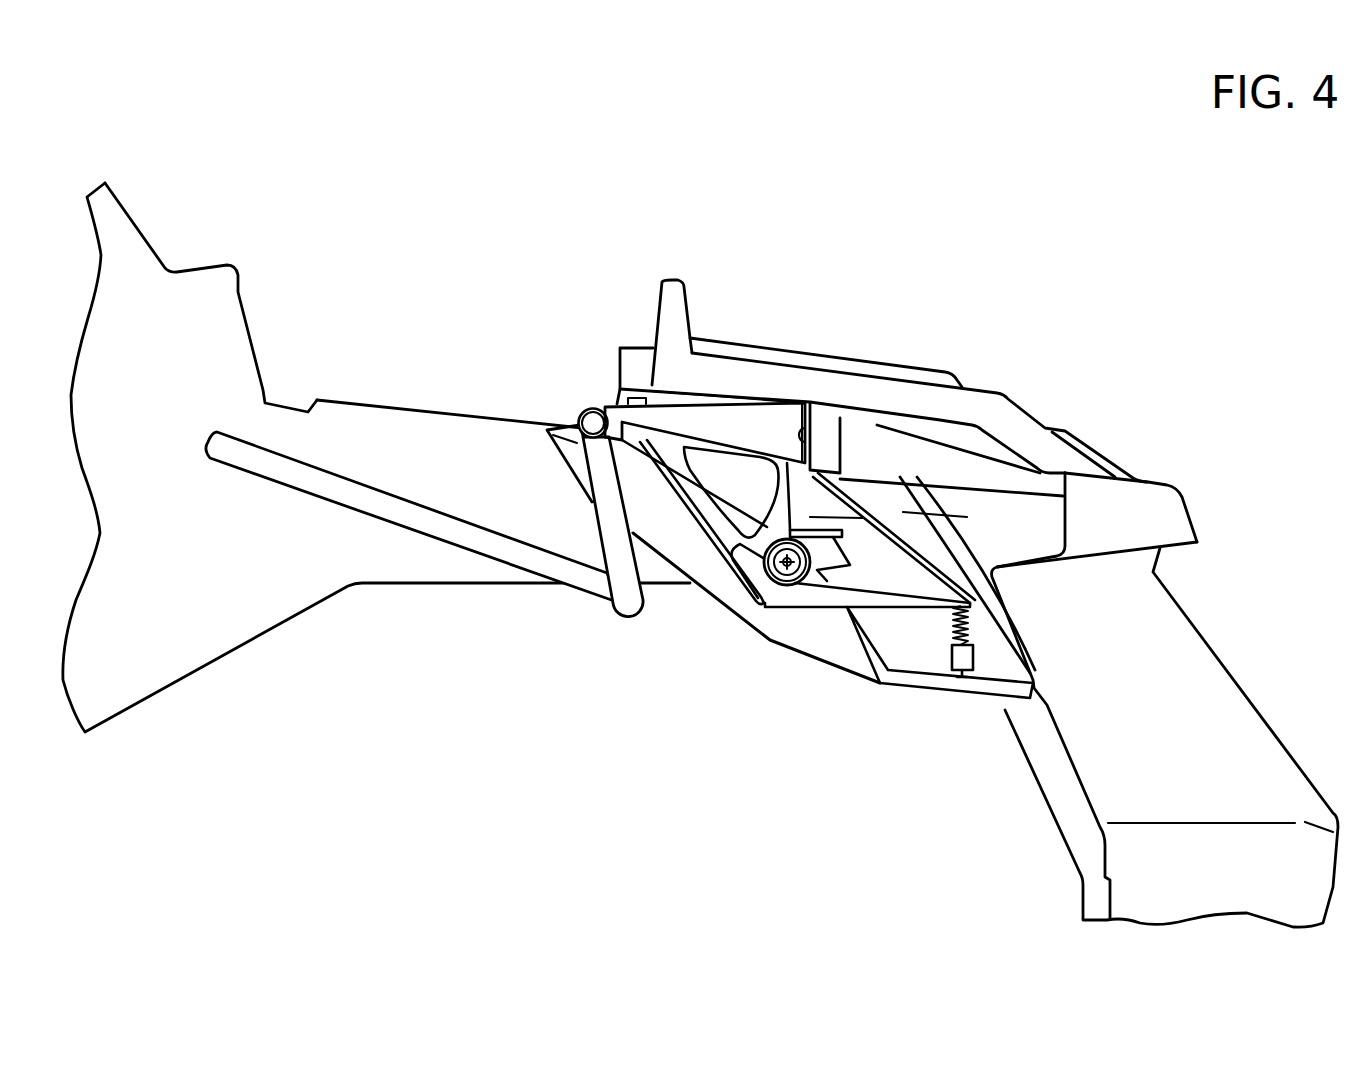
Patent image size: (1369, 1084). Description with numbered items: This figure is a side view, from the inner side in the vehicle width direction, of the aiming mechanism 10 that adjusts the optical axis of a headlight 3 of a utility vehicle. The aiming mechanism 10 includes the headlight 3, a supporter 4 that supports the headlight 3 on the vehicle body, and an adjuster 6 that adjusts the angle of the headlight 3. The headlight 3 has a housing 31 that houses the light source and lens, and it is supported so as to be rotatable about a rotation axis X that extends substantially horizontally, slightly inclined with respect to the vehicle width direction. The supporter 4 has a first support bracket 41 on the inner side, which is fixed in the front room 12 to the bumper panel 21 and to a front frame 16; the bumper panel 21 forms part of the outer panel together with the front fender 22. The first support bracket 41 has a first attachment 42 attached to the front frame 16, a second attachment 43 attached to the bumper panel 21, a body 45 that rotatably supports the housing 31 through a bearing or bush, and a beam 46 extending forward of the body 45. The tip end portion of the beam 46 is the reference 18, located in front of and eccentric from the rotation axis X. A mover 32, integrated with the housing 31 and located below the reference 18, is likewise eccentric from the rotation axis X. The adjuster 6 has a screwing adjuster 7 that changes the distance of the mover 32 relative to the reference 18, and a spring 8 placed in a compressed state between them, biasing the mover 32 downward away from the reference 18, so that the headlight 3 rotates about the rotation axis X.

The headlight 3 is at (566, 465).
The supporter 4 is at (598, 381).
The adjuster 6 is at (973, 640).
The screwing adjuster 7 is at (962, 678).
The spring 8 is at (950, 622).
The aiming mechanism 10 is at (663, 743).
The front room 12 is at (467, 724).
The front frame 16 is at (578, 414).
The reference 18 is at (878, 645).
The bumper panel 21 is at (1253, 703).
The front fender 22 is at (343, 400).
The housing 31 is at (718, 597).
The mover 32 is at (940, 660).
The first support bracket 41 is at (700, 540).
The first attachment 42 is at (673, 403).
The second attachment 43 is at (800, 432).
The body 45 is at (827, 470).
The beam 46 is at (945, 612).
The rotation axis X is at (787, 575).